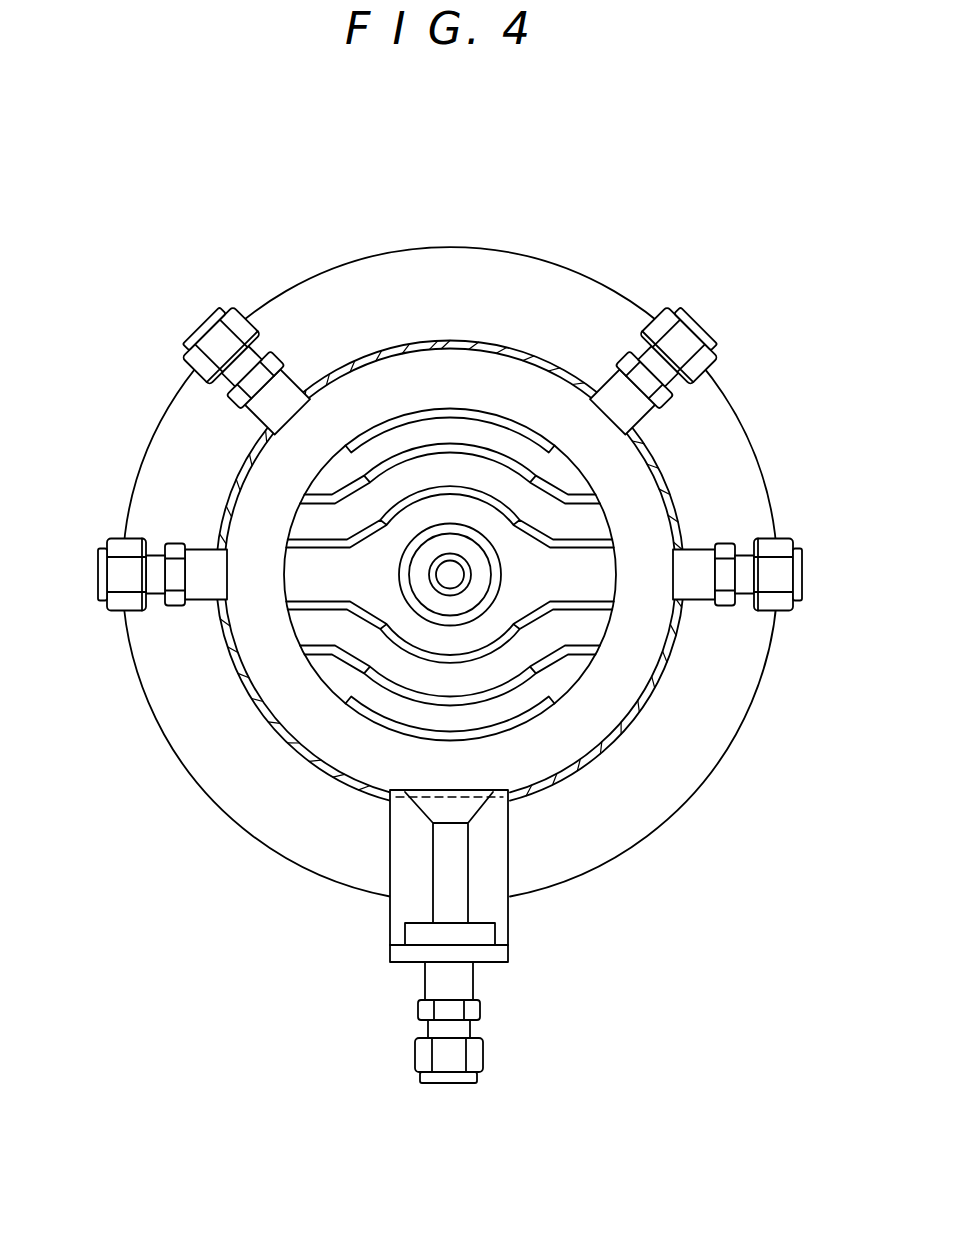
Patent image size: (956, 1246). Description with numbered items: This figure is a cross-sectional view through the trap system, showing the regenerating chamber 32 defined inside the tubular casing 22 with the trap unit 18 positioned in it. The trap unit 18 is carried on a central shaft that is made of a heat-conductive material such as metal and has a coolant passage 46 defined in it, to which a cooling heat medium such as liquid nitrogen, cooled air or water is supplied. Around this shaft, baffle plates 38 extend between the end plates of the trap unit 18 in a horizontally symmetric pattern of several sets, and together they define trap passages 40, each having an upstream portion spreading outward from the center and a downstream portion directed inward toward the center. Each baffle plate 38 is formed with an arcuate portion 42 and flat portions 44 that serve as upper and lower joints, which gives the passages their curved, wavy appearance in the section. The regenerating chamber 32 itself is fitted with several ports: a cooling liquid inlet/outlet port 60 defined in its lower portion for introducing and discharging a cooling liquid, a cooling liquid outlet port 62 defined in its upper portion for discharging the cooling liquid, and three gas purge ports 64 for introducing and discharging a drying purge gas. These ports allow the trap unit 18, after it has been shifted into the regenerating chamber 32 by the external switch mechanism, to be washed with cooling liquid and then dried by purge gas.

The trap unit 18 is at (638, 666).
The tubular casing 22 is at (414, 345).
The regenerating chamber 32 is at (497, 380).
The baffle plates 38 is at (343, 667).
The trap passages 40 is at (323, 630).
The arcuate portion 42 is at (517, 443).
The flat portions 44 is at (585, 490).
The coolant passage 46 is at (473, 597).
The cooling liquid inlet/outlet port 60 is at (487, 1052).
The cooling liquid outlet port 62 is at (207, 313).
The gas purge ports 64 is at (808, 560).